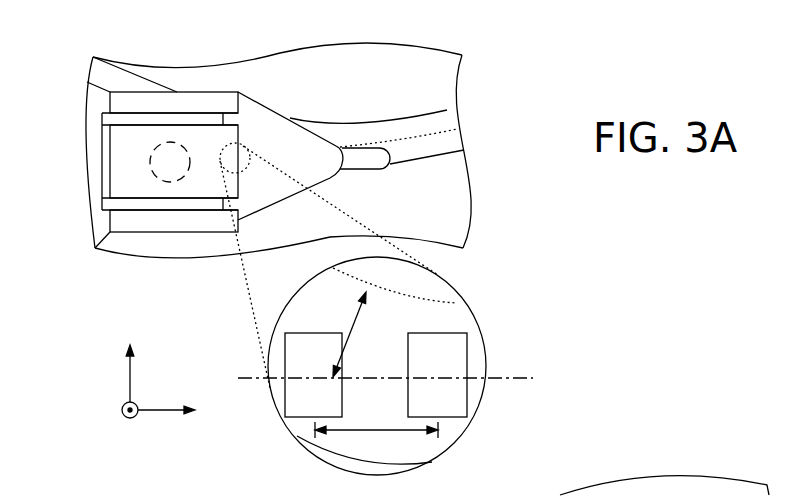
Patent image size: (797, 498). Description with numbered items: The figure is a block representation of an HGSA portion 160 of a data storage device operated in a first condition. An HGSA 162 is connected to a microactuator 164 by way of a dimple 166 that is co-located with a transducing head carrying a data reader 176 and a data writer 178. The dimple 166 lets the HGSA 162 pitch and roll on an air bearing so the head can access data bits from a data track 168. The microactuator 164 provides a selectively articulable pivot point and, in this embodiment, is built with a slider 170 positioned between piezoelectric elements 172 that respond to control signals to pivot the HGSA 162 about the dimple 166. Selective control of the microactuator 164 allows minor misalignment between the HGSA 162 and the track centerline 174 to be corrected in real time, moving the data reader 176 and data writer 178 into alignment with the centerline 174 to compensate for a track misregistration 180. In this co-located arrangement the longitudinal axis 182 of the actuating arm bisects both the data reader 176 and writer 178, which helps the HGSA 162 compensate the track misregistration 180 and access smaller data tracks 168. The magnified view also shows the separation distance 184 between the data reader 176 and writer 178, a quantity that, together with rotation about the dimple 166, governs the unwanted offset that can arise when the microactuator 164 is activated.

The HGSA portion 160 is at (105, 41).
The HGSA 162 is at (329, 168).
The microactuator 164 is at (196, 252).
The dimple 166 is at (140, 167).
The data track 168 is at (462, 137).
The slider 170 is at (147, 147).
The piezoelectric elements 172 is at (137, 233).
The centerline 174 is at (410, 138).
The data reader 176 is at (330, 359).
The data writer 178 is at (453, 359).
The track misregistration 180 is at (344, 334).
The longitudinal axis 182 is at (503, 381).
The separation distance 184 is at (376, 437).